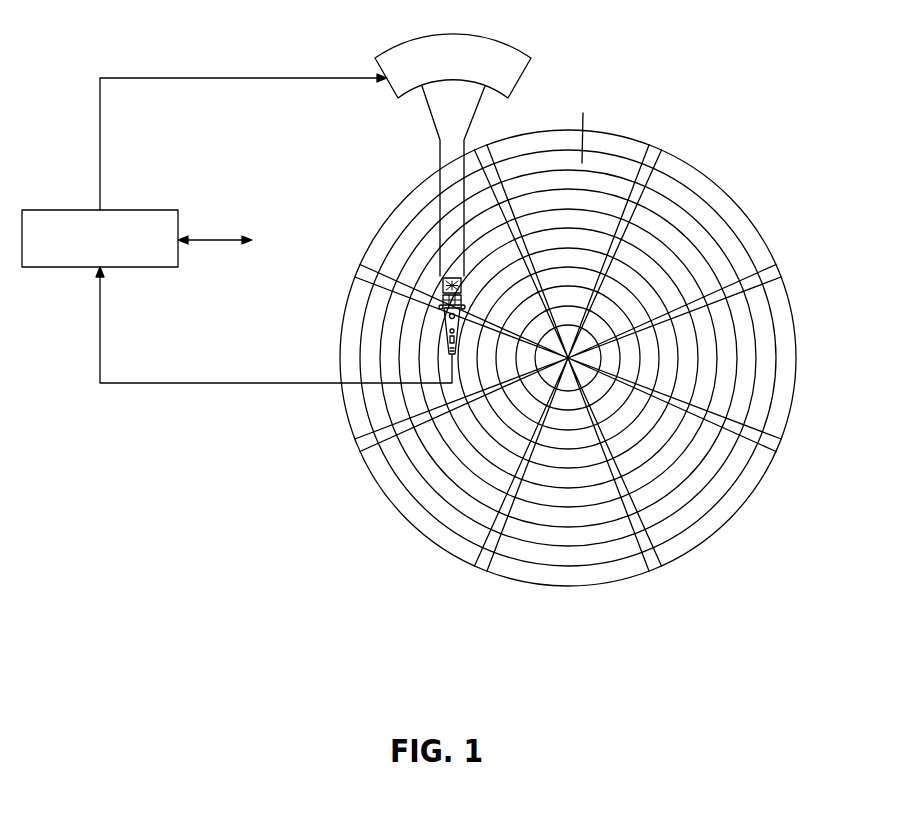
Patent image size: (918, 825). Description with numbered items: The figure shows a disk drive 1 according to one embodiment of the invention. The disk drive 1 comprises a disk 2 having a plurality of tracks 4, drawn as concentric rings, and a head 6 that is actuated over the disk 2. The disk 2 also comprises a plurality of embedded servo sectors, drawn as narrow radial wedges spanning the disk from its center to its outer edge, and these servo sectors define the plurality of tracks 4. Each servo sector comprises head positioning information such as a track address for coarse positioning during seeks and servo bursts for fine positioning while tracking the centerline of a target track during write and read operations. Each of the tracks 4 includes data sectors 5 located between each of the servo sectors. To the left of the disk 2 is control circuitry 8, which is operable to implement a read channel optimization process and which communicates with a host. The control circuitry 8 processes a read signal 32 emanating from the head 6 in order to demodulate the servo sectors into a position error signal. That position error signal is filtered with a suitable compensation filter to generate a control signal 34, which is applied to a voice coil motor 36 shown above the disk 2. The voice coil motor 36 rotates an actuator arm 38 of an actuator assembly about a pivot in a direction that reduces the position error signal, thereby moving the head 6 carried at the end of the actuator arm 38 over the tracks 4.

The disk drive 1 is at (675, 84).
The disk 2 is at (719, 169).
The tracks 4 is at (573, 140).
The data sectors 5 is at (725, 212).
The head 6 is at (442, 345).
The control circuitry 8 is at (143, 210).
The read signal 32 is at (233, 383).
The control signal 34 is at (99, 152).
The voice coil motor 36 is at (392, 88).
The actuator arm 38 is at (438, 145).